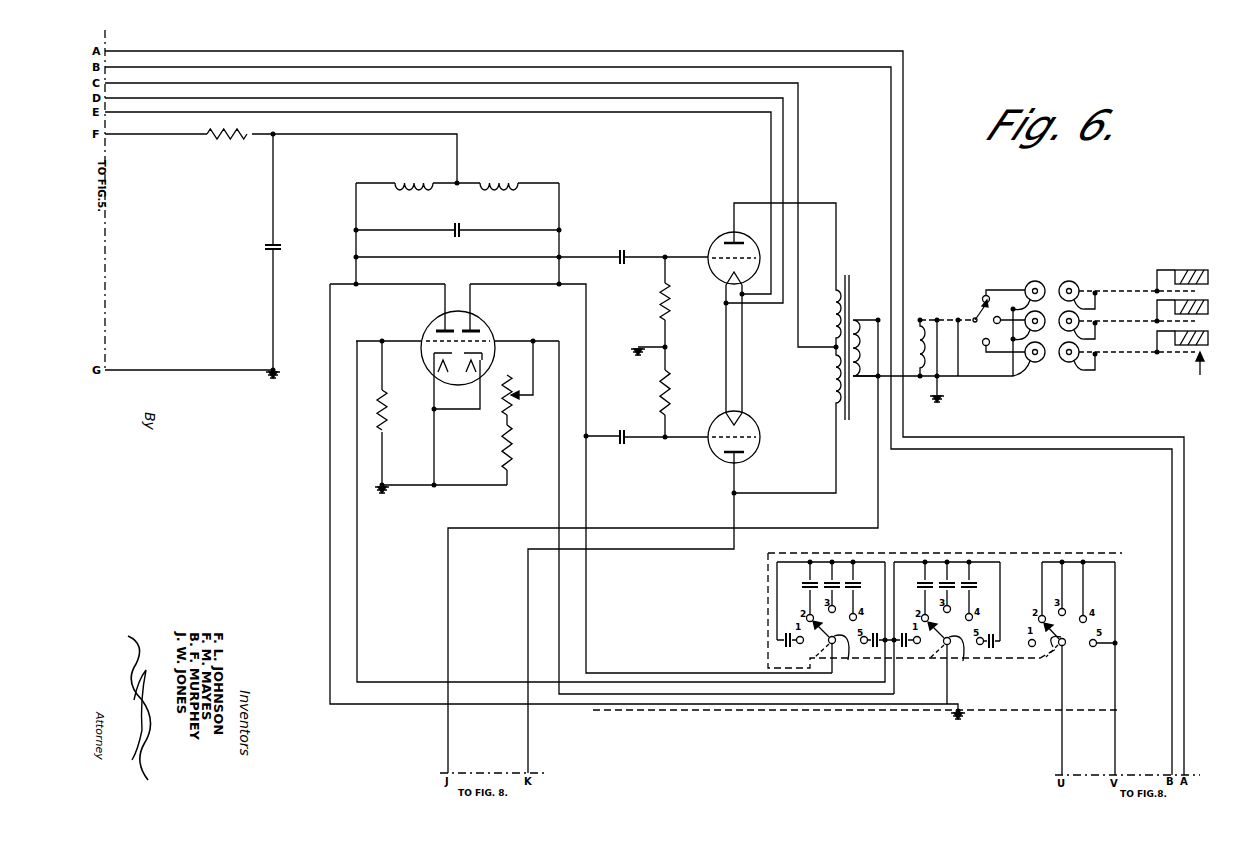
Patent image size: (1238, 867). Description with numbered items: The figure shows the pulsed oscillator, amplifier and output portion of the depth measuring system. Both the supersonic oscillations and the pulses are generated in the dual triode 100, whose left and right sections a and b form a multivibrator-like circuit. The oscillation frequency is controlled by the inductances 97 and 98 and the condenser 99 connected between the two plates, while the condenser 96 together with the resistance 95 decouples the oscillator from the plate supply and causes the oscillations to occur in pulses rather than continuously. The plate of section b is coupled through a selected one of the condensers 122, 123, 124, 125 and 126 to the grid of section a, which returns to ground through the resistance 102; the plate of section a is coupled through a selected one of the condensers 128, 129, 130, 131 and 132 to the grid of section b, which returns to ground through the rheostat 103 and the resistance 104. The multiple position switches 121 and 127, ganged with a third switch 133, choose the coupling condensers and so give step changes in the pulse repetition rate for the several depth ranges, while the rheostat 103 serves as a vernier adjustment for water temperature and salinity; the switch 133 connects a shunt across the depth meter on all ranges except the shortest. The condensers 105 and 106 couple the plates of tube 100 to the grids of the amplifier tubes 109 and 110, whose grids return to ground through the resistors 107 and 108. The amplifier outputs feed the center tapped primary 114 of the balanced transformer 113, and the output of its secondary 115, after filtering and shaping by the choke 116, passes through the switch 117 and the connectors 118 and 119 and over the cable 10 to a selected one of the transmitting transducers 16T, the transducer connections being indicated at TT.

The resistance 95 is at (228, 140).
The condenser 96 is at (279, 249).
The inductance 97 is at (412, 181).
The inductance 98 is at (497, 181).
The condenser 99 is at (460, 236).
The dual triode 100 is at (487, 333).
The resistance 102 is at (385, 413).
The rheostat 103 is at (511, 407).
The resistance 104 is at (511, 449).
The condenser 105 is at (630, 242).
The condenser 106 is at (625, 430).
The resistor 107 is at (670, 306).
The resistor 108 is at (670, 398).
The amplifier tube 109 is at (725, 238).
The amplifier tube 110 is at (716, 455).
The balanced transformer 113 is at (849, 272).
The center tapped primary 114 is at (830, 330).
The secondary 115 is at (859, 320).
The choke 116 is at (917, 379).
The switch 117 is at (973, 315).
The connector 118 is at (1035, 281).
The connector 119 is at (1069, 281).
The cable 10 is at (1109, 351).
The transmitting transducer 16T is at (1187, 303).
The telephone terminals TT is at (1198, 373).
The multiple position switch 121 is at (849, 657).
The condenser 122 is at (787, 648).
The condenser 123 is at (806, 590).
The condenser 124 is at (831, 578).
The condenser 125 is at (856, 590).
The condenser 126 is at (867, 636).
The multiple position switch 127 is at (964, 658).
The condenser 128 is at (906, 648).
The condenser 129 is at (921, 590).
The condenser 130 is at (946, 578).
The condenser 131 is at (972, 590).
The condenser 132 is at (982, 636).
The third switch 133 is at (1048, 655).